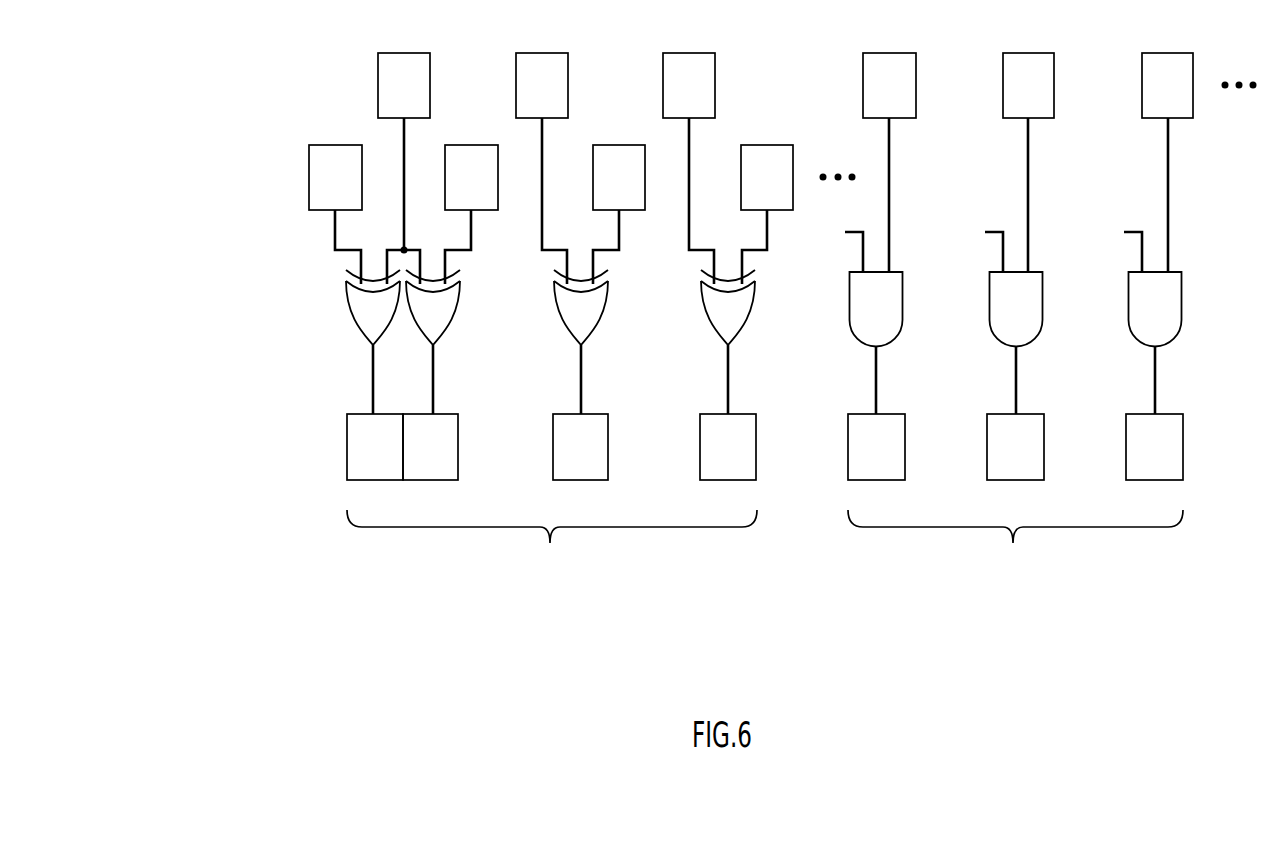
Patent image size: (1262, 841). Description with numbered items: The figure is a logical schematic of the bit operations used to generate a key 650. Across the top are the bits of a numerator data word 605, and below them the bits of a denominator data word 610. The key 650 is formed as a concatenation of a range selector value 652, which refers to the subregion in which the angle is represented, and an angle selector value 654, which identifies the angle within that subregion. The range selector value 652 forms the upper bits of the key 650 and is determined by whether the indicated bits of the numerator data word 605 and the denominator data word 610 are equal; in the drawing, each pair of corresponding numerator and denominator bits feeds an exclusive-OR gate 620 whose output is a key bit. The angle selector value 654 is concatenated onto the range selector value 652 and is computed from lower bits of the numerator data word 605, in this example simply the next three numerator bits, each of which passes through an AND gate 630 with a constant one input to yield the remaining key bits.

The numerator data word 605 is at (236, 91).
The denominator data word 610 is at (148, 180).
The XOR gates 620 is at (305, 320).
The AND gates 630 is at (822, 305).
The key 650 is at (277, 440).
The range selector value 652 is at (407, 528).
The angle selector value 654 is at (893, 528).